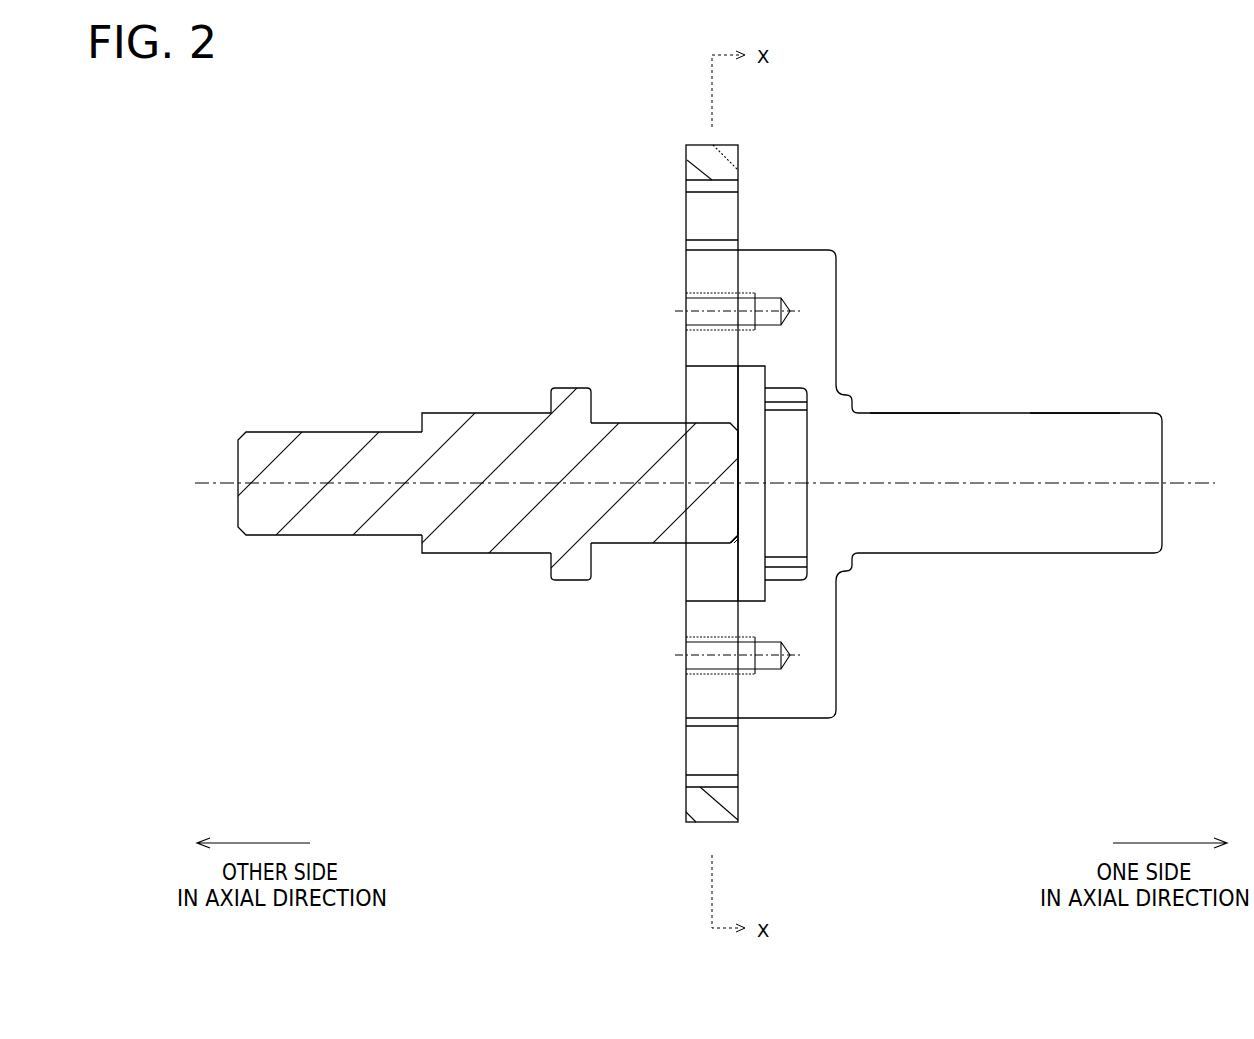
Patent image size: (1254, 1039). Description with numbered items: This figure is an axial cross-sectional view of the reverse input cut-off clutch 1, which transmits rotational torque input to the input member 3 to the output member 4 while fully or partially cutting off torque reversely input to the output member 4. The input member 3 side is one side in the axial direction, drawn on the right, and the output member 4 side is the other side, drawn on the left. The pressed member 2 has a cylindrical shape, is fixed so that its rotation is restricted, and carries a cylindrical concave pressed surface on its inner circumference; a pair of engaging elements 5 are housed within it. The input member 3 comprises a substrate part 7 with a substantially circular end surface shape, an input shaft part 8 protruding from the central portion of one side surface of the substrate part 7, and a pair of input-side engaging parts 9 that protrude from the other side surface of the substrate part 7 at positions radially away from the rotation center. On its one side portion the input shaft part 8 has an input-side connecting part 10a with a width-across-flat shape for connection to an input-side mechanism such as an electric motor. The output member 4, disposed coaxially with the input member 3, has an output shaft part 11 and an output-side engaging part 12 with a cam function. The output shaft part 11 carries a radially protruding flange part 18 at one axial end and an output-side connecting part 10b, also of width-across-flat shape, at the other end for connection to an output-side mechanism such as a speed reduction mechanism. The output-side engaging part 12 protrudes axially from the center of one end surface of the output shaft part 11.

The reverse input cut-off clutch 1 is at (857, 203).
The pressed member 2 is at (700, 797).
The input member 3 is at (1110, 540).
The output member 4 is at (315, 520).
The engaging element 5 is at (700, 217).
The substrate part 7 is at (817, 325).
The input shaft part 8 is at (908, 430).
The input-side engaging part 9 is at (748, 282).
The input-side connecting part 10a is at (1078, 468).
The output-side connecting part 10b is at (330, 447).
The output shaft part 11 is at (487, 540).
The output-side engaging part 12 is at (638, 438).
The flange part 18 is at (573, 568).